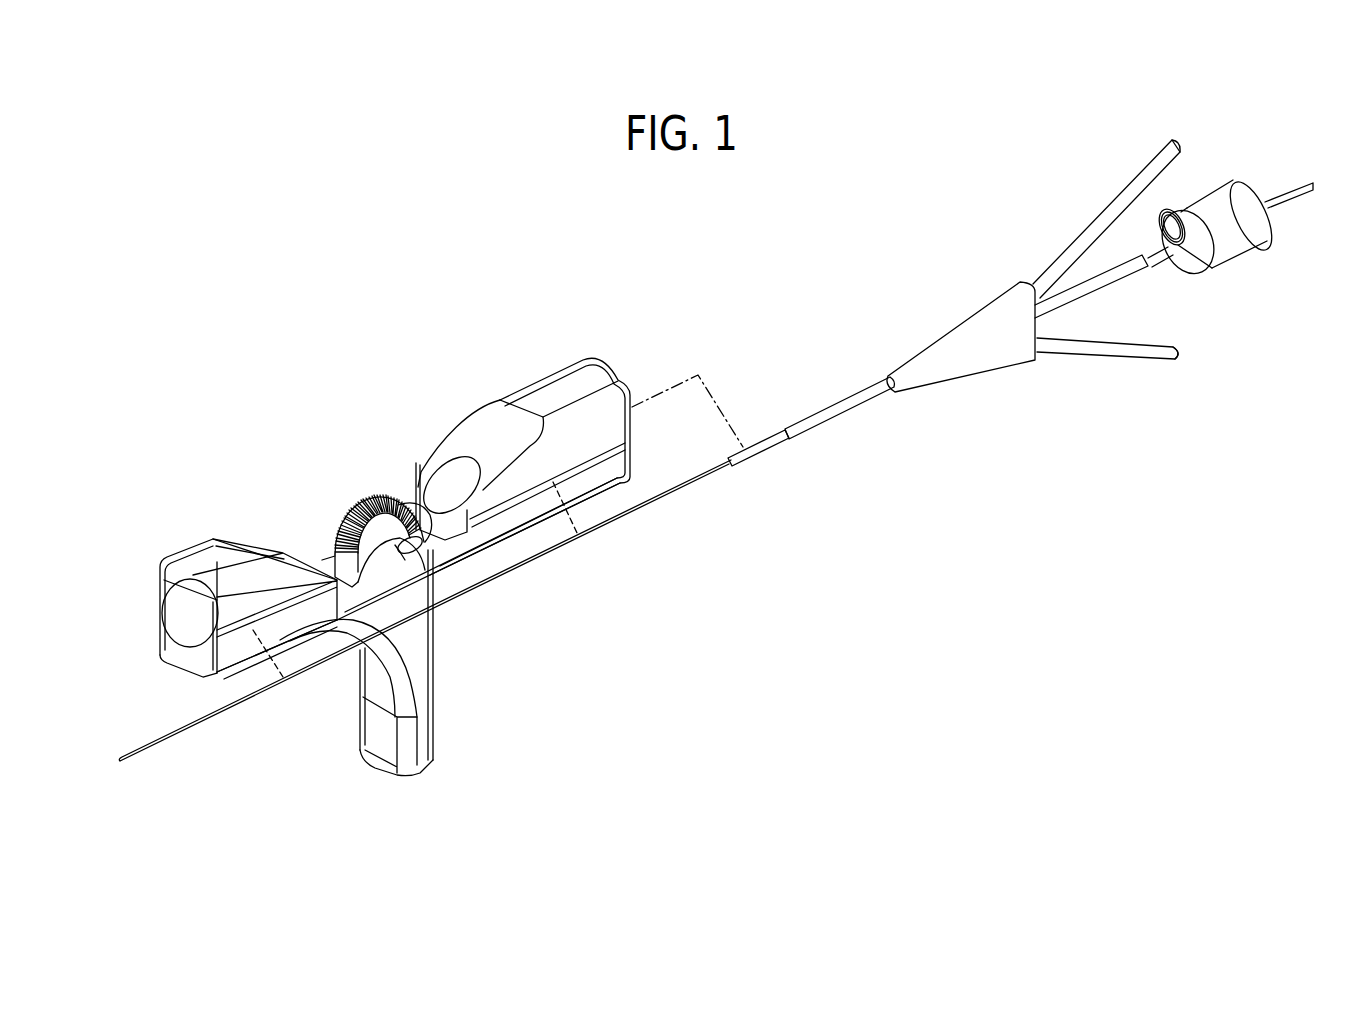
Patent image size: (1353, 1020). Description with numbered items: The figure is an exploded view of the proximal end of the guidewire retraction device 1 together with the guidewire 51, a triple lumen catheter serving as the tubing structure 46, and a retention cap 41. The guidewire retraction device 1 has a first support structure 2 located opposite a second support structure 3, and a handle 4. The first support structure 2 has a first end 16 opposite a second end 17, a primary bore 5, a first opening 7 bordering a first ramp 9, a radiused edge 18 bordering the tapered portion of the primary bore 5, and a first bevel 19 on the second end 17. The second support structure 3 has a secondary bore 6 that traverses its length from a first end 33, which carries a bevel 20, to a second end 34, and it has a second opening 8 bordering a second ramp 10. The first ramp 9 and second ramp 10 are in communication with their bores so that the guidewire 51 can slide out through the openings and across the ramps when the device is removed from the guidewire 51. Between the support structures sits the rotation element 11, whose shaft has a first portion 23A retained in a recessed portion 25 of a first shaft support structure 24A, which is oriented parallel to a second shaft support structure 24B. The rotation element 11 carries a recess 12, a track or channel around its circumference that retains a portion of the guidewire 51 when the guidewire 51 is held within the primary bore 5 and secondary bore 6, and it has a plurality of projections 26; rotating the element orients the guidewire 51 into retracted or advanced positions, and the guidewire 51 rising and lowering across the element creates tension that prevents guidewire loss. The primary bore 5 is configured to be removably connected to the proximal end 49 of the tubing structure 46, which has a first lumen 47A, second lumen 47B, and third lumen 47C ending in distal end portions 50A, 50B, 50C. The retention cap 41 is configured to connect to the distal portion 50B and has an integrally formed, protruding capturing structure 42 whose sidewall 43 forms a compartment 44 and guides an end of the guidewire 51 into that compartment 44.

The guidewire retraction device 1 is at (258, 315).
The first support structure 2 is at (558, 388).
The second support structure 3 is at (204, 567).
The handle 4 is at (425, 737).
The primary bore 5 is at (462, 473).
The secondary bore 6 is at (178, 610).
The first opening 7 is at (527, 497).
The second opening 8 is at (232, 633).
The first ramp 9 is at (470, 512).
The second ramp 10 is at (217, 643).
The rotation element 11 is at (378, 530).
The recess 12 is at (352, 514).
The first end 16 is at (618, 380).
The second end 17 is at (400, 520).
The radiused edge 18 is at (447, 462).
The first bevel 19 is at (486, 424).
The bevel 20 is at (250, 547).
The first portion of shaft 23A is at (400, 540).
The first shaft support structure 24A is at (415, 550).
The second shaft support structure 24B is at (333, 552).
The recessed portion 25 is at (420, 550).
The plurality of projections 26 is at (348, 514).
The first end 33 is at (335, 592).
The second end 34 is at (176, 642).
The retention cap 41 is at (1208, 192).
The capturing structure 42 is at (1165, 235).
The sidewall 43 is at (1188, 230).
The compartment 44 is at (1212, 272).
The tubing structure 46 is at (958, 373).
The first lumen 47A is at (1120, 195).
The second lumen 47B is at (1082, 295).
The third lumen 47C is at (1097, 348).
The proximal end 49 is at (742, 468).
The distal end portion 50A is at (1178, 150).
The distal end portion 50B is at (1153, 263).
The distal end portion 50C is at (1173, 357).
The guidewire 51 is at (648, 507).